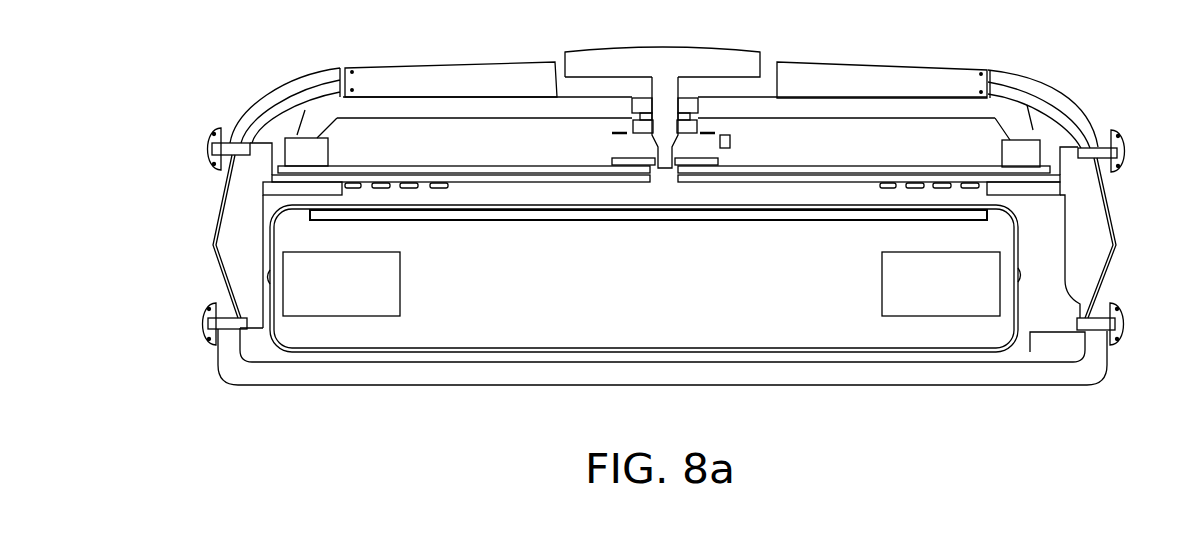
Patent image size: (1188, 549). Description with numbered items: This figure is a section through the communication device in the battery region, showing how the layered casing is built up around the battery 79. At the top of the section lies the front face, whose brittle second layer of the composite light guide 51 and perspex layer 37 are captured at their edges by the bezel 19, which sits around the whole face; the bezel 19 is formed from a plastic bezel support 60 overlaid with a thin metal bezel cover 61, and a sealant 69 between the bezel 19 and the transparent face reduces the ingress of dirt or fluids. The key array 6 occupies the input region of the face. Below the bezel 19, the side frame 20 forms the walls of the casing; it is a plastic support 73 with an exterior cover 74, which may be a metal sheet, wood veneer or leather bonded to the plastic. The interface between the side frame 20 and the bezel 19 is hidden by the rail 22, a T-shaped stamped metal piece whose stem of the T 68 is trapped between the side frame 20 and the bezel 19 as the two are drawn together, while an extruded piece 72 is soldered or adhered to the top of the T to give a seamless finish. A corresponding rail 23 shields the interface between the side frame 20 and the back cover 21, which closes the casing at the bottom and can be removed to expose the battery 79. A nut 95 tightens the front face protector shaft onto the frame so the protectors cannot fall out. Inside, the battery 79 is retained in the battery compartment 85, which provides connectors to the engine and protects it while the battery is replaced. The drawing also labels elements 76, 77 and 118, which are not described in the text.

The key array 6 is at (667, 50).
The bezel 19 is at (278, 123).
The side frame 20 is at (1088, 212).
The back cover 21 is at (1053, 378).
The rail 22 is at (1126, 152).
The rail 23 is at (1118, 325).
The perspex layer 37 is at (922, 107).
The second layer of the composite light guide 51 is at (452, 78).
The bezel support 60 is at (1072, 130).
The bezel cover 61 is at (1054, 98).
The stem of the T 68 is at (208, 166).
The sealant 69 is at (297, 135).
The extruded piece 72 is at (212, 133).
The plastic support 73 is at (255, 263).
The exterior cover 74 is at (213, 251).
The upper plate 76 is at (498, 115).
The intermediate plate 77 is at (718, 182).
The battery 79 is at (845, 337).
The battery compartment 85 is at (1024, 280).
The nut 95 is at (380, 183).
The spacer bar 118 is at (613, 186).